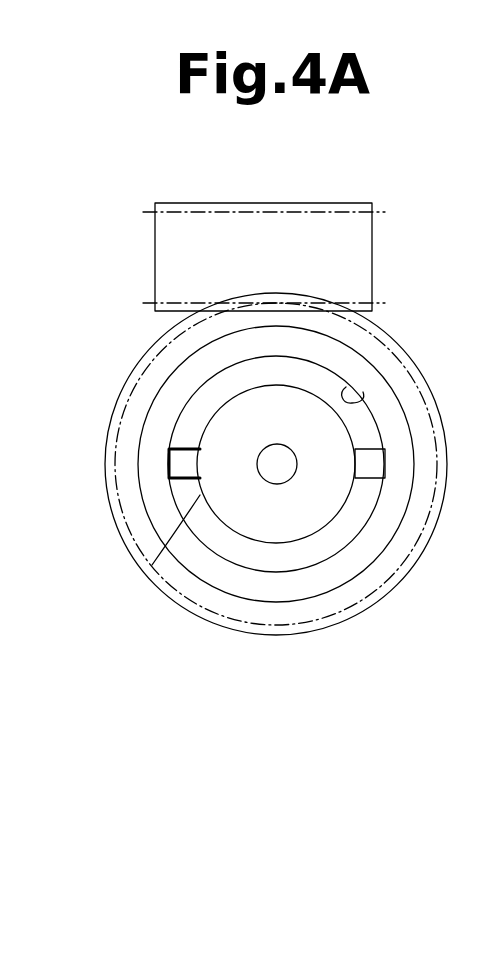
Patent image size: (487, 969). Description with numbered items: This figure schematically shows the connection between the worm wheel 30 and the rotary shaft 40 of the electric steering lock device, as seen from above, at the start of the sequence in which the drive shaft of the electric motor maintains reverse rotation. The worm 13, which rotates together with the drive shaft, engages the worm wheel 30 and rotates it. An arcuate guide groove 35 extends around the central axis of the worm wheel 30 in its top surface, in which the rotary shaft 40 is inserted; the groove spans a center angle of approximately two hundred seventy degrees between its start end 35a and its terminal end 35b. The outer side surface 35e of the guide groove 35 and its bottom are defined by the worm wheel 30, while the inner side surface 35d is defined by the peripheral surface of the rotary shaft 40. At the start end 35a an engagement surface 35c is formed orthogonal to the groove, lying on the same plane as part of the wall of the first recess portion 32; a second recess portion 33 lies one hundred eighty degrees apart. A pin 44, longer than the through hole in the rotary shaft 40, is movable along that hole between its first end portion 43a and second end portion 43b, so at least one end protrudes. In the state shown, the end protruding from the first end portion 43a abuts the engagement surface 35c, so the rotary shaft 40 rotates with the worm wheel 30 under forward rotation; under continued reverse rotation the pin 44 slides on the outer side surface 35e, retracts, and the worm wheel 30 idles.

The worm 13 is at (160, 249).
The worm wheel 30 is at (315, 635).
The first recess portion 32 is at (198, 470).
The second recess portion 33 is at (368, 477).
The guide groove 35 is at (170, 552).
The start end 35a is at (169, 432).
The terminal end 35b is at (225, 390).
The engagement surface 35c is at (167, 460).
The inner side surface 35d is at (192, 521).
The outer side surface 35e is at (362, 395).
The rotary shaft 40 is at (320, 505).
The first end portion 43a is at (197, 462).
The second end portion 43b is at (357, 460).
The pin 44 is at (168, 474).